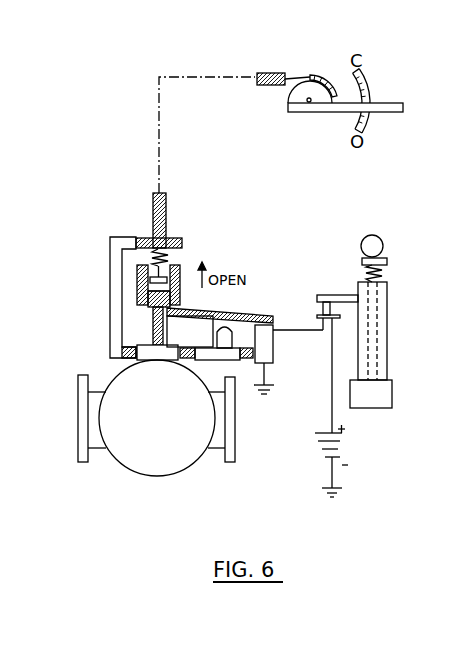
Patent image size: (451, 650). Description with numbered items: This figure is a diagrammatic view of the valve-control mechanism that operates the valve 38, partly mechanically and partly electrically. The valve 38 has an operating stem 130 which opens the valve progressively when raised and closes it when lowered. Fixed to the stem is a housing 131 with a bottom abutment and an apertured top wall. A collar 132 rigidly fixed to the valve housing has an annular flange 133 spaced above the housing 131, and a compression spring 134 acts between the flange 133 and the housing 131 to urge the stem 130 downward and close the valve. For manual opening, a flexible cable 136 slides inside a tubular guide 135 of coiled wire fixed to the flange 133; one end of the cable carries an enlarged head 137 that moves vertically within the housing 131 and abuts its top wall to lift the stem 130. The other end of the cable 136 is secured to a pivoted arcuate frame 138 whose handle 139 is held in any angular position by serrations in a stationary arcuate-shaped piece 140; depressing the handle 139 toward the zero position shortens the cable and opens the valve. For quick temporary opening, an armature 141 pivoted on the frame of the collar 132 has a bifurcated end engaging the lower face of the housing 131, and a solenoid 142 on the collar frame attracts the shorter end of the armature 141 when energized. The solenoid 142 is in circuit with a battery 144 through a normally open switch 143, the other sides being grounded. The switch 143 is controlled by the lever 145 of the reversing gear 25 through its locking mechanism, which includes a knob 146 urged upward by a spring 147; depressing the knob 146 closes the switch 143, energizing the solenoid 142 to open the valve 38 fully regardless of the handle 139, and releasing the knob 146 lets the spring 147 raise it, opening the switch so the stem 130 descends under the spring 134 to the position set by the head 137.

The reversing gear 25 is at (392, 396).
The valve 38 is at (172, 476).
The operating stem 130 is at (150, 322).
The housing 131 is at (142, 296).
The collar 132 is at (125, 356).
The annular flange 133 is at (140, 237).
The compression spring 134 is at (172, 260).
The tubular guide 135 is at (166, 207).
The flexible cable 136 is at (327, 78).
The enlarged head 137 is at (140, 282).
The arcuate frame 138 is at (300, 112).
The handle 139 is at (396, 103).
The arcuate-shaped piece 140 is at (371, 83).
The armature 141 is at (270, 300).
The solenoid 142 is at (272, 338).
The switch 143 is at (316, 316).
The battery 144 is at (350, 444).
The lever 145 is at (385, 356).
The knob 146 is at (381, 241).
The spring 147 is at (384, 270).